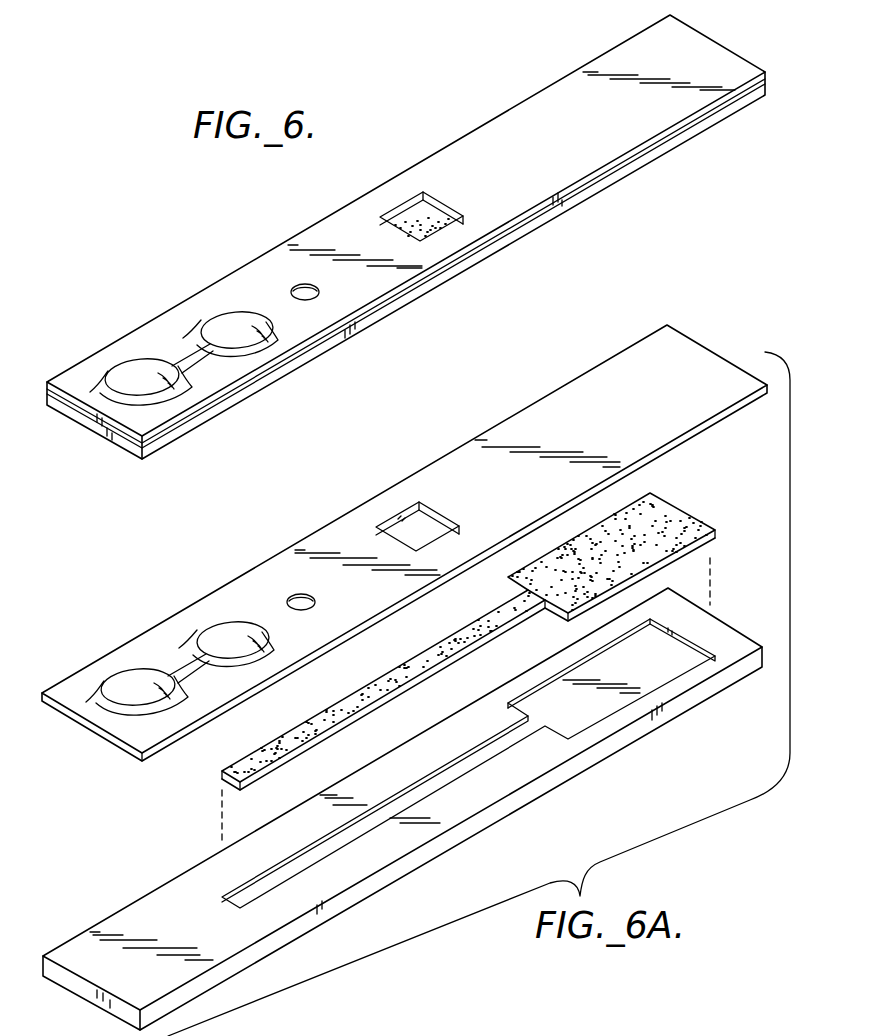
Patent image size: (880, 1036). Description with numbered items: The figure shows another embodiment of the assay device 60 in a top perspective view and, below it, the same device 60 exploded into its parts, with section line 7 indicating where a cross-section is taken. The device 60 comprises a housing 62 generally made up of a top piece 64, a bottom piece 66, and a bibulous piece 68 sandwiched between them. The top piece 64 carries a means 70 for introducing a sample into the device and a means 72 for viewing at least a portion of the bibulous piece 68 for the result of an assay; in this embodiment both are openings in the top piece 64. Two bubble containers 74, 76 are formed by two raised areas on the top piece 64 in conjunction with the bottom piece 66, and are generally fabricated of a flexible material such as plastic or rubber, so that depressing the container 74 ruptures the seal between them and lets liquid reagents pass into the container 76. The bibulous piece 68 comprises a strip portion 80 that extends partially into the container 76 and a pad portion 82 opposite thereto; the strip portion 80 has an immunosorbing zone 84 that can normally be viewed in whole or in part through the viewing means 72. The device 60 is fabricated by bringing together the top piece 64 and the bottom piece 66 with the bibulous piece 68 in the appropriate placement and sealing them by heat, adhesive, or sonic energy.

In FIG. 6, the device 60 is at (218, 204).
In FIG. 6A, the device 60 is at (580, 1035).
In FIG. 6, the housing 62 is at (465, 130).
In FIG. 6, the top piece 64 is at (648, 123).
In FIG. 6A, the top piece 64 is at (545, 416).
In FIG. 6, the bottom piece 66 is at (608, 180).
In FIG. 6A, the bottom piece 66 is at (523, 795).
In FIG. 6, the bibulous piece 68 is at (440, 210).
In FIG. 6A, the bibulous piece 68 is at (683, 503).
In FIG. 6, the means for introducing a sample 70 is at (290, 290).
In FIG. 6A, the means for introducing a sample 70 is at (295, 597).
In FIG. 6, the means for viewing 72 is at (400, 206).
In FIG. 6A, the means for viewing 72 is at (410, 523).
In FIG. 6, the bubble container 74 is at (135, 372).
In FIG. 6A, the bubble container 74 is at (128, 683).
In FIG. 6, the bubble container 76 is at (205, 328).
In FIG. 6A, the bubble container 76 is at (210, 637).
In FIG. 6A, the strip portion 80 is at (226, 763).
In FIG. 6A, the pad portion 82 is at (668, 546).
In FIG. 6A, the immunosorbing zone 84 is at (440, 658).
In FIG. 6, the section line 7- 7 is at (384, 223).